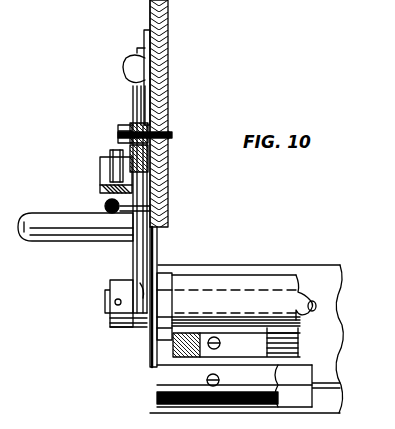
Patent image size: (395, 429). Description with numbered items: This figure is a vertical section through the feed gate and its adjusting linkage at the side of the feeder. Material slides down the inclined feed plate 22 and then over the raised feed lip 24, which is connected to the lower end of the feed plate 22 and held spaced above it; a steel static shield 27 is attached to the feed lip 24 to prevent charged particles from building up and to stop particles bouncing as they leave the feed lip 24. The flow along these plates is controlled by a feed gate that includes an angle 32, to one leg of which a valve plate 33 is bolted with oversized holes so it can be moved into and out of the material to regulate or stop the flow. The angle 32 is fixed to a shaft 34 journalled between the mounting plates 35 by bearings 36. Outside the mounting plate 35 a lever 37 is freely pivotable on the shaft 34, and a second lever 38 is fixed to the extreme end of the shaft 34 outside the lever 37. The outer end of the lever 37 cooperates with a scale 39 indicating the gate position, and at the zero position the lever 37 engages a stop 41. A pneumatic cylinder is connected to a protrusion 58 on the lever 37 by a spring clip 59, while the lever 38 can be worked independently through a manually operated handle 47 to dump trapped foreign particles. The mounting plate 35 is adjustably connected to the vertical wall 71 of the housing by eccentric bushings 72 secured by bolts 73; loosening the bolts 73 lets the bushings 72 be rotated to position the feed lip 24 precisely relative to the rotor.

The inclined feed plate 22 is at (338, 316).
The feed lip 24 is at (160, 410).
The static shield 27 is at (160, 376).
The angle 32 is at (232, 275).
The valve plate 33 is at (275, 353).
The shaft 34 is at (306, 297).
The mounting plate 35 is at (153, 100).
The bearings 36 is at (165, 280).
The lever 37 is at (143, 272).
The second lever 38 is at (112, 280).
The scale 39 is at (144, 38).
The stop 41 is at (124, 66).
The manually operated handle 47 is at (80, 213).
The protrusion 58 is at (103, 168).
The spring clip 59 is at (115, 153).
The vertical wall 71 is at (168, 34).
The eccentric bushings 72 is at (133, 122).
The bolts 73 is at (172, 135).